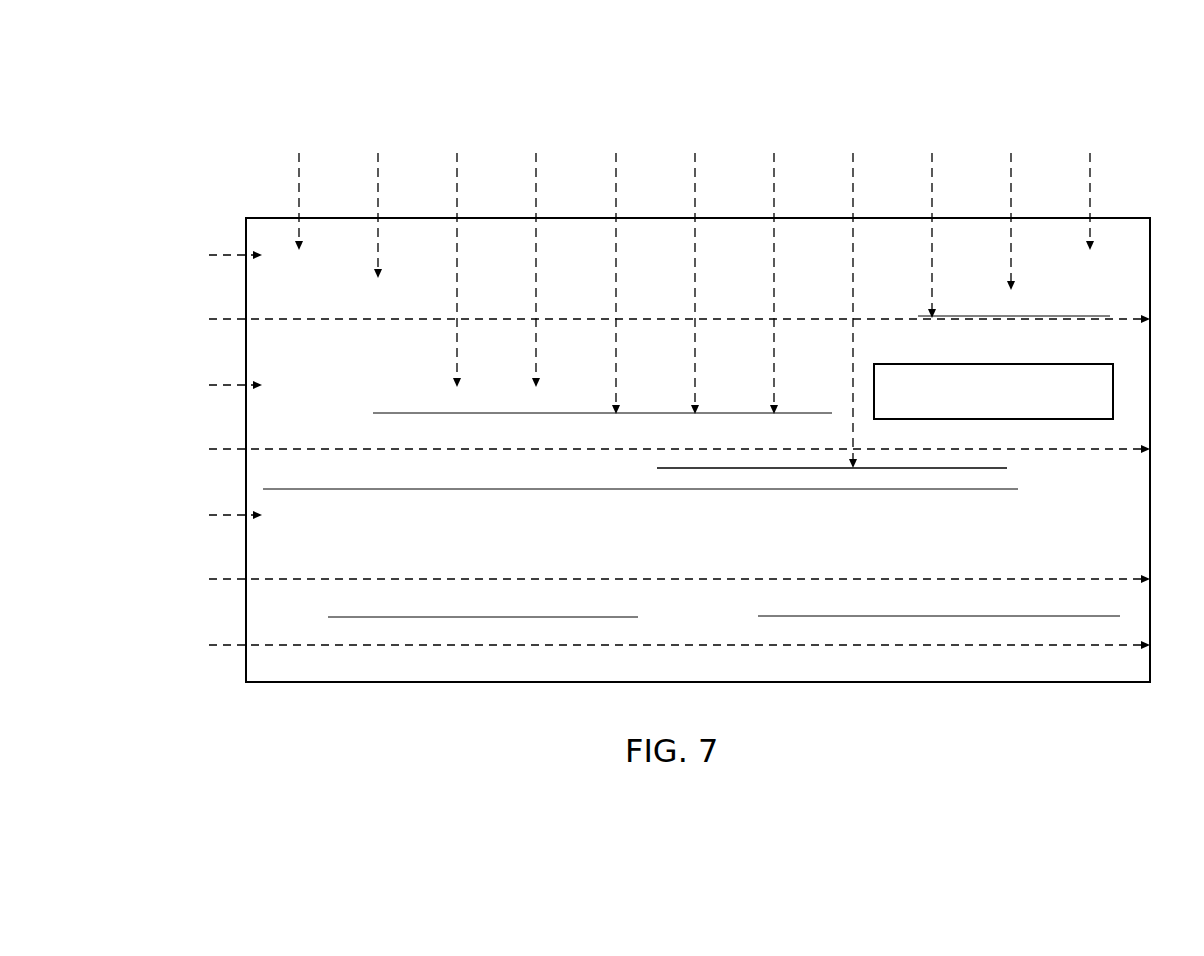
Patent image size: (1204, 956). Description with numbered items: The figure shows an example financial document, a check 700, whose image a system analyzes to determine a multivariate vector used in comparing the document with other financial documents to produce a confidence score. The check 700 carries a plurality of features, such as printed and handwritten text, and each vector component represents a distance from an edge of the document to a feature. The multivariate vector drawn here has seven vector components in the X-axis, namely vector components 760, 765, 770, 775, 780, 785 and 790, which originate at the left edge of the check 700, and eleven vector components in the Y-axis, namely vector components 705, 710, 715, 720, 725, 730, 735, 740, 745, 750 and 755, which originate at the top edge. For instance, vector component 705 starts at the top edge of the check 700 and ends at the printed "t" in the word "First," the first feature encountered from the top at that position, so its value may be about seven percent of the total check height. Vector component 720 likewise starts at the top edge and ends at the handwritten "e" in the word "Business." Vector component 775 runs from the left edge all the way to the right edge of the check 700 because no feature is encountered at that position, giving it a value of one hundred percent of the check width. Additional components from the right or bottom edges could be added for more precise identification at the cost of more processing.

The check 700 is at (238, 191).
The vector component 705 is at (299, 118).
The vector component 710 is at (378, 118).
The vector component 715 is at (457, 118).
The vector component 720 is at (536, 118).
The vector component 725 is at (616, 118).
The vector component 730 is at (695, 118).
The vector component 735 is at (774, 118).
The vector component 740 is at (853, 118).
The vector component 745 is at (932, 118).
The vector component 750 is at (1011, 118).
The vector component 755 is at (1090, 118).
The vector component 760 is at (193, 242).
The vector component 765 is at (193, 306).
The vector component 770 is at (193, 372).
The vector component 775 is at (193, 436).
The vector component 780 is at (193, 502).
The vector component 785 is at (193, 566).
The vector component 790 is at (193, 632).